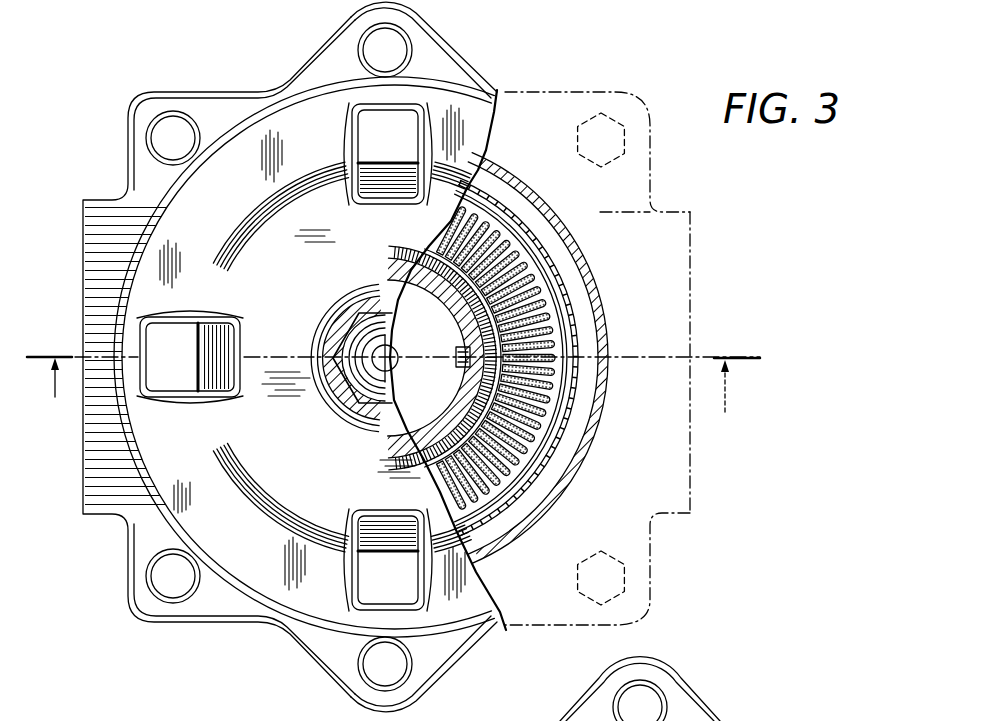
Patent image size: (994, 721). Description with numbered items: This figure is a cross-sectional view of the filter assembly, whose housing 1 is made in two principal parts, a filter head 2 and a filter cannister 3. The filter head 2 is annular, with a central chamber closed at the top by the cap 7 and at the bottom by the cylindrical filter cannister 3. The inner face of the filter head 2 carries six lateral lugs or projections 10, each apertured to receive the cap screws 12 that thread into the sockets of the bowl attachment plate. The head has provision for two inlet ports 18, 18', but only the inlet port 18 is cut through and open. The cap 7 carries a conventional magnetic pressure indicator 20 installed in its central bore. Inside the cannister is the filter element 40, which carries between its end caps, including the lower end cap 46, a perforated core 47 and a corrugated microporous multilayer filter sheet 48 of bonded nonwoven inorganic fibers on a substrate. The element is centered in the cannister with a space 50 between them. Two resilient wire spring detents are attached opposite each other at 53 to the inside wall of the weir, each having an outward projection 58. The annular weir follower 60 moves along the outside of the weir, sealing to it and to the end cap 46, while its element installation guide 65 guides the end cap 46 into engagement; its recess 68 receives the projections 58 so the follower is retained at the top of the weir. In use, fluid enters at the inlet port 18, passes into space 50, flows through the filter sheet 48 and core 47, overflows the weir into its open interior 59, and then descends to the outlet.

The housing 1 is at (503, 72).
The filter head 2 is at (258, 628).
The filter cannister 3 is at (596, 281).
The cap 7 is at (298, 313).
The lateral lugs or projections 10 is at (417, 18).
The cap screws 12 is at (160, 138).
The inlet port 18 is at (99, 357).
The inlet port 18' is at (726, 362).
The magnetic pressure indicator 20 is at (345, 380).
The filter element 40 is at (548, 379).
The end cap 46 is at (520, 500).
The perforated core 47 is at (415, 268).
The corrugated microporous multilayer filter sheet 48 is at (553, 330).
The space 50 is at (585, 424).
The attachment location 53 is at (466, 354).
The outward projection 58 is at (466, 382).
The open interior 59 is at (397, 385).
The weir follower 60 is at (452, 288).
The element installation guide 65 is at (538, 232).
The recess 68 is at (466, 330).